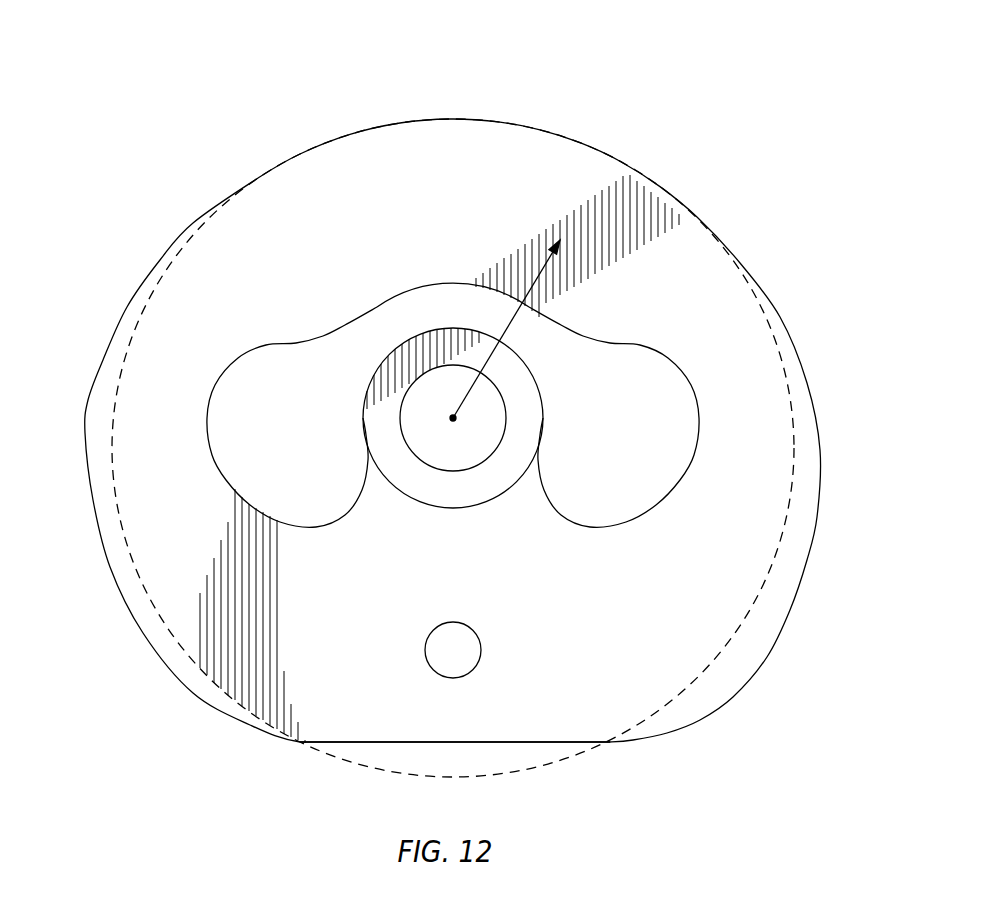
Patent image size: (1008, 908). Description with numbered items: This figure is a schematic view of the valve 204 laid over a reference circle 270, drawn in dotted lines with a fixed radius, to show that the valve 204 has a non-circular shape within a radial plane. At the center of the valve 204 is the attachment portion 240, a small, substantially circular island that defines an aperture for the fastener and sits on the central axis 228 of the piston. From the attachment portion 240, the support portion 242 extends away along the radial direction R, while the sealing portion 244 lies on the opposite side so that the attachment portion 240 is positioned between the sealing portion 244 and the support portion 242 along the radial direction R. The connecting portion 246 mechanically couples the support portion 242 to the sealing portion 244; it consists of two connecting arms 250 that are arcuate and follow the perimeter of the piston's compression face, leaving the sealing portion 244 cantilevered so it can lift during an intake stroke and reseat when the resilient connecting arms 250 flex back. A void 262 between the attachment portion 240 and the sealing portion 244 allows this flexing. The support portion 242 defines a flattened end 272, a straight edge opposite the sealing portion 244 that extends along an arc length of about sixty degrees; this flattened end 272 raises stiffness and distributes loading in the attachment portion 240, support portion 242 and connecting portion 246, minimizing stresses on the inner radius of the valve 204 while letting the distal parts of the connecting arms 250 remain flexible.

The valve 204 is at (756, 136).
The central axis 228 is at (451, 413).
The attachment portion 240 is at (507, 475).
The support portion 242 is at (528, 664).
The sealing portion 244 is at (373, 173).
The connecting portion 246 is at (750, 467).
The connecting arms 250 is at (148, 437).
The void 262 is at (275, 433).
The reference circle 270 is at (530, 770).
The flattened end 272 is at (570, 746).
The radial direction R is at (537, 273).